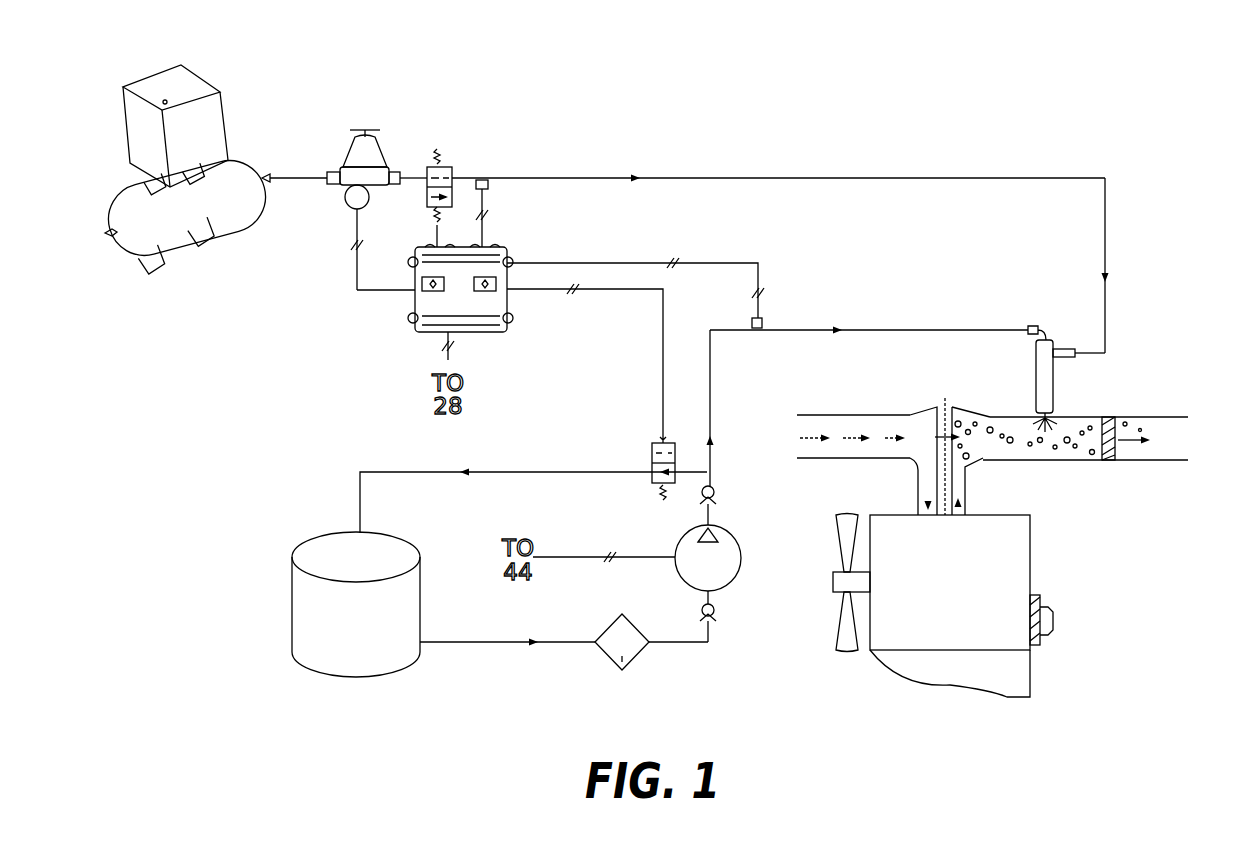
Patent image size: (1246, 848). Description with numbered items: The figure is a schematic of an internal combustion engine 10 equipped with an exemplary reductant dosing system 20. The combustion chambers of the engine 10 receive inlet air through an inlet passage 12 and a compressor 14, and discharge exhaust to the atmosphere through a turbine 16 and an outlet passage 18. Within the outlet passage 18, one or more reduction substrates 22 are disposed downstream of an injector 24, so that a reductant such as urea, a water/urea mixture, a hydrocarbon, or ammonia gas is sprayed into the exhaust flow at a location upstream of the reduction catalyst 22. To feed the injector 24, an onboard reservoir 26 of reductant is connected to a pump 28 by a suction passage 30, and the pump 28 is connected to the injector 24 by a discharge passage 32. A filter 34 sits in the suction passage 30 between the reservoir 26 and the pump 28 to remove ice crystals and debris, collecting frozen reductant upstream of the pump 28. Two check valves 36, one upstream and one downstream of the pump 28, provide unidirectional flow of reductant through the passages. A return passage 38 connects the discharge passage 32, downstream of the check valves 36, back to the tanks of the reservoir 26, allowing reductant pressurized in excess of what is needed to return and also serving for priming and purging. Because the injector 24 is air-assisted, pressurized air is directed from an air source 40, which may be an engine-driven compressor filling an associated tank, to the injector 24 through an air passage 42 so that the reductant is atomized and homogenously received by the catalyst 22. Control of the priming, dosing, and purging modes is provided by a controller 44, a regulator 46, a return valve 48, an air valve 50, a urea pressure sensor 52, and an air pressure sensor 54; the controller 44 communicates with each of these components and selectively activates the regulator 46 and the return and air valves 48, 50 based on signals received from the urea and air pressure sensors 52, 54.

The engine 10 is at (931, 602).
The inlet passage 12 is at (838, 447).
The compressor 14 is at (917, 465).
The turbine 16 is at (963, 467).
The outlet passage 18 is at (1072, 453).
The reductant dosing system 20 is at (943, 114).
The reduction substrate 22 is at (1115, 462).
The injector 24 is at (1055, 383).
The reservoir 26 is at (342, 635).
The pump 28 is at (696, 576).
The suction passage 30 is at (685, 643).
The discharge passage 32 is at (918, 332).
The filter 34 is at (611, 652).
The check valve 36 is at (720, 497).
The return passage 38 is at (518, 475).
The air source 40 is at (185, 224).
The air passage 42 is at (930, 182).
The controller 44 is at (460, 303).
The regulator 46 is at (378, 148).
The return valve 48 is at (652, 453).
The air valve 50 is at (452, 162).
The urea pressure sensor 52 is at (765, 323).
The air pressure sensor 54 is at (488, 184).